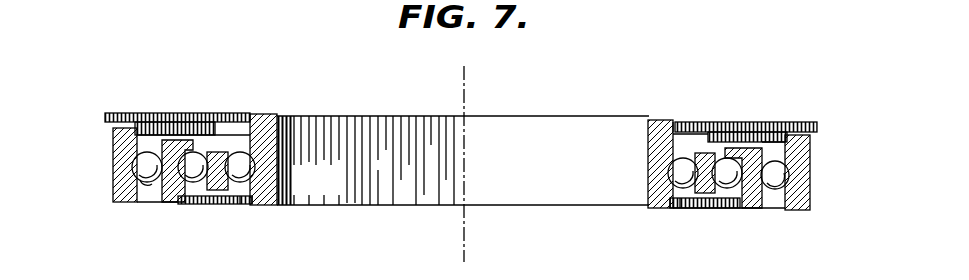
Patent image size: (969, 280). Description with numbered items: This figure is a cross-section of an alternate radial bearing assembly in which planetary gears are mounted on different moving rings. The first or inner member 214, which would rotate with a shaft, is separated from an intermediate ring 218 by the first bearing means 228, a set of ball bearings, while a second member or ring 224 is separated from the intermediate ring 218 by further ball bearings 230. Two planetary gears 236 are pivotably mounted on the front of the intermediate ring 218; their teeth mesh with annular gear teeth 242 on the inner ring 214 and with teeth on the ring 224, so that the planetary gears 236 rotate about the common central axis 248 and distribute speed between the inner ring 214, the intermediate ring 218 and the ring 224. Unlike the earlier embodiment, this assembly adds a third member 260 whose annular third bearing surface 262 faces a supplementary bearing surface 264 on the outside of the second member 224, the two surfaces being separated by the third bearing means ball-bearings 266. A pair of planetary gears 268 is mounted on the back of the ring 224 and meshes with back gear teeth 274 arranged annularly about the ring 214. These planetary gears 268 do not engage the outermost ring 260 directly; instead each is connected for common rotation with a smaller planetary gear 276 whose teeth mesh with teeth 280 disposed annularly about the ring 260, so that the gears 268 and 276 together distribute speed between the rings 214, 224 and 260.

The inner member 214 is at (657, 183).
The intermediate ring 218 is at (228, 148).
The second member 224 is at (158, 140).
The first bearing means 228 is at (263, 168).
The bearing means 230 is at (213, 152).
The planetary gears 236 is at (225, 206).
The annular gear teeth 242 is at (241, 206).
The common central axis 248 is at (466, 82).
The third member 260 is at (807, 210).
The third bearing surface 262 is at (150, 187).
The supplementary bearing surface 264 is at (153, 183).
The third bearing means ball-bearings 266 is at (142, 170).
The planetary gears 268 is at (113, 112).
The gear teeth 274 is at (252, 114).
The smaller planetary gear 276 is at (676, 136).
The teeth 280 is at (134, 128).